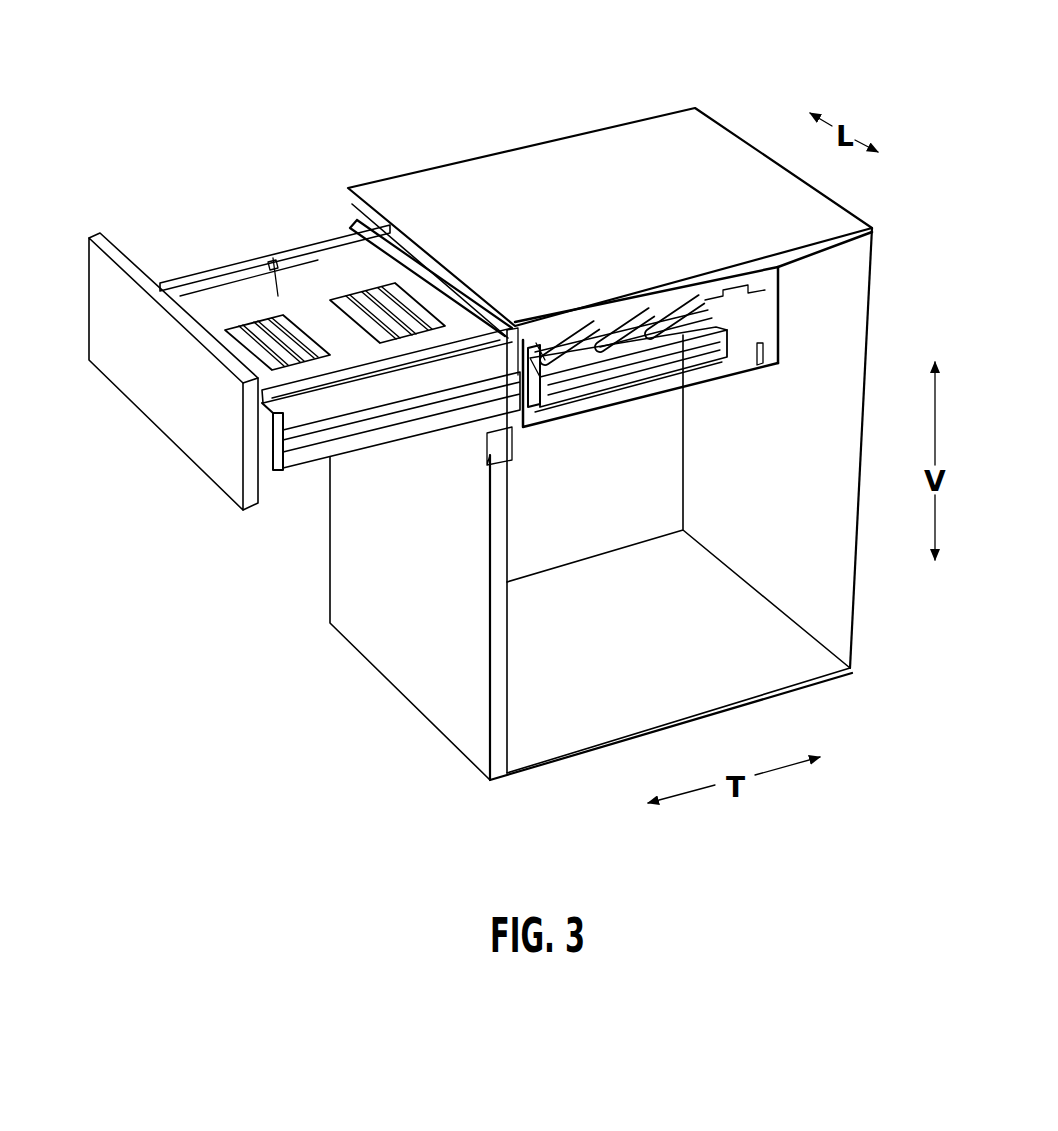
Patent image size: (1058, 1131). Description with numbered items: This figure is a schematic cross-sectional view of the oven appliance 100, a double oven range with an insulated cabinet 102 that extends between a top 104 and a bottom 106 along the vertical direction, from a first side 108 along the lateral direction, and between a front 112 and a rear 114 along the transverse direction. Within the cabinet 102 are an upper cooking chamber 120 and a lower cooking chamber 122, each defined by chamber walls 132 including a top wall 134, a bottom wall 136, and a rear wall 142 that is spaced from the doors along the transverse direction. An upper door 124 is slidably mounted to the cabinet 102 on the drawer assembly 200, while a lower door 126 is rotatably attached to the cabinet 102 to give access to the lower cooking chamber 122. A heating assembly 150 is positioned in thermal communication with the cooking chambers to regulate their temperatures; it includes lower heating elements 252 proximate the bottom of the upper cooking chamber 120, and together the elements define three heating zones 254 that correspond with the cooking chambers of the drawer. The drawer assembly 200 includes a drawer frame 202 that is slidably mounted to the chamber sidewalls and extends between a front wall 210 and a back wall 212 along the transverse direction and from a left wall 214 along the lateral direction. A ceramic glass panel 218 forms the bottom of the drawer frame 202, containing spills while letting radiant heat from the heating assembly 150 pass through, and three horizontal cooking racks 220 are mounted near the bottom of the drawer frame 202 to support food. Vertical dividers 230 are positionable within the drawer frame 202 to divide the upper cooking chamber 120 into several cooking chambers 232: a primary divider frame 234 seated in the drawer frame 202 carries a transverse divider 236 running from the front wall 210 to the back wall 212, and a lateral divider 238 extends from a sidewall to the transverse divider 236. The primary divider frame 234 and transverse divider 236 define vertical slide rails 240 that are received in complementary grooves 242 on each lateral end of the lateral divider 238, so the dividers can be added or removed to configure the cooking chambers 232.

The oven appliance 100 is at (178, 72).
The insulated cabinet 102 is at (860, 612).
The top 104 is at (728, 148).
The bottom 106 is at (577, 762).
The first side 108 is at (670, 487).
The front 112 is at (478, 738).
The rear 114 is at (868, 395).
The upper cooking chamber 120 is at (768, 298).
The lower cooking chamber 122 is at (770, 650).
The upper door 124 is at (190, 428).
The lower door 126 is at (412, 668).
The chamber walls 132 is at (782, 347).
The top wall 134 is at (660, 302).
The bottom wall 136 is at (603, 418).
The rear wall 142 is at (783, 313).
The heating assembly 150 is at (712, 300).
The drawer assembly 200 is at (120, 205).
The drawer frame 202 is at (183, 275).
The front wall 210 is at (275, 458).
The back wall 212 is at (437, 330).
The left wall 214 is at (100, 248).
The ceramic glass panel 218 is at (366, 452).
The horizontal cooking racks 220 is at (255, 340).
The vertical dividers 230 is at (383, 335).
The cooking chambers 232 is at (323, 262).
The primary divider frame 234 is at (302, 455).
The transverse divider 236 is at (476, 348).
The lateral divider 238 is at (340, 295).
The vertical slide rails 240 is at (275, 262).
The complementary grooves 242 is at (300, 258).
The lower heating elements 252 is at (620, 320).
The heating zones 254 is at (573, 330).